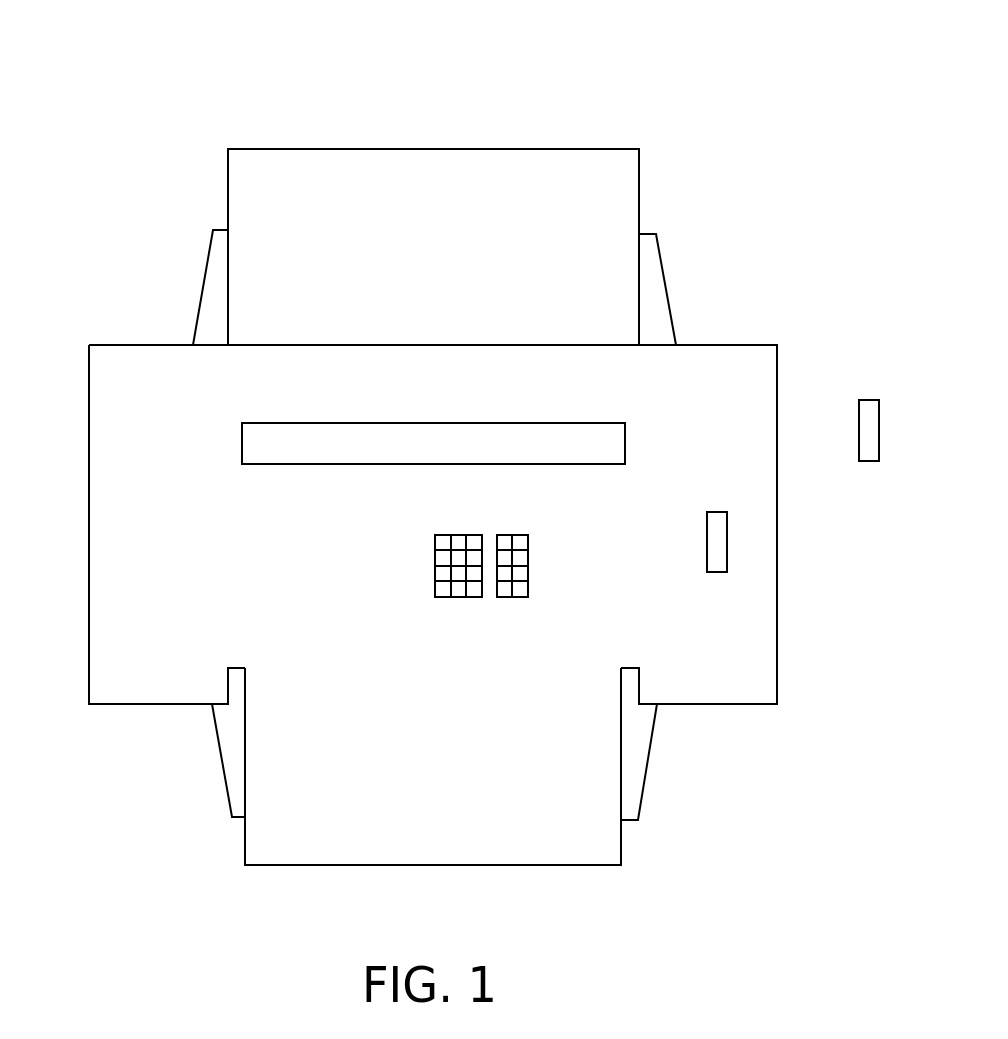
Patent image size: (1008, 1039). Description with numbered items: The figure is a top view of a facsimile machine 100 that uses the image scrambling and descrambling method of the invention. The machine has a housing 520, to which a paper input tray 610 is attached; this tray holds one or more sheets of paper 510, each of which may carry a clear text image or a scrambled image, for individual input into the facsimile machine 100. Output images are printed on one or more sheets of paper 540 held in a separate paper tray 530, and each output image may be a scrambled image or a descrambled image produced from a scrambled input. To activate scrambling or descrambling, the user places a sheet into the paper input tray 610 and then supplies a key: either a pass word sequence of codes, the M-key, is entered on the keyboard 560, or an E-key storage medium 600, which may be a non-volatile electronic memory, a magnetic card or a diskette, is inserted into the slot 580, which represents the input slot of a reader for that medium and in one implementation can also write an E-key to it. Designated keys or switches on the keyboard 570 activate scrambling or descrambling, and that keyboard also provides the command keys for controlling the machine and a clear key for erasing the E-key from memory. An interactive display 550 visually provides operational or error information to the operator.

The facsimile machine 100 is at (716, 80).
The sheets of paper 510 is at (520, 866).
The housing 520 is at (89, 494).
The paper tray 530 is at (198, 298).
The sheets of paper 540 is at (432, 149).
The interactive display 550 is at (583, 426).
The keyboard 560 is at (435, 573).
The keyboard 570 is at (528, 573).
The slot 580 is at (717, 575).
The E-key storage medium 600 is at (871, 400).
The paper input tray 610 is at (216, 739).